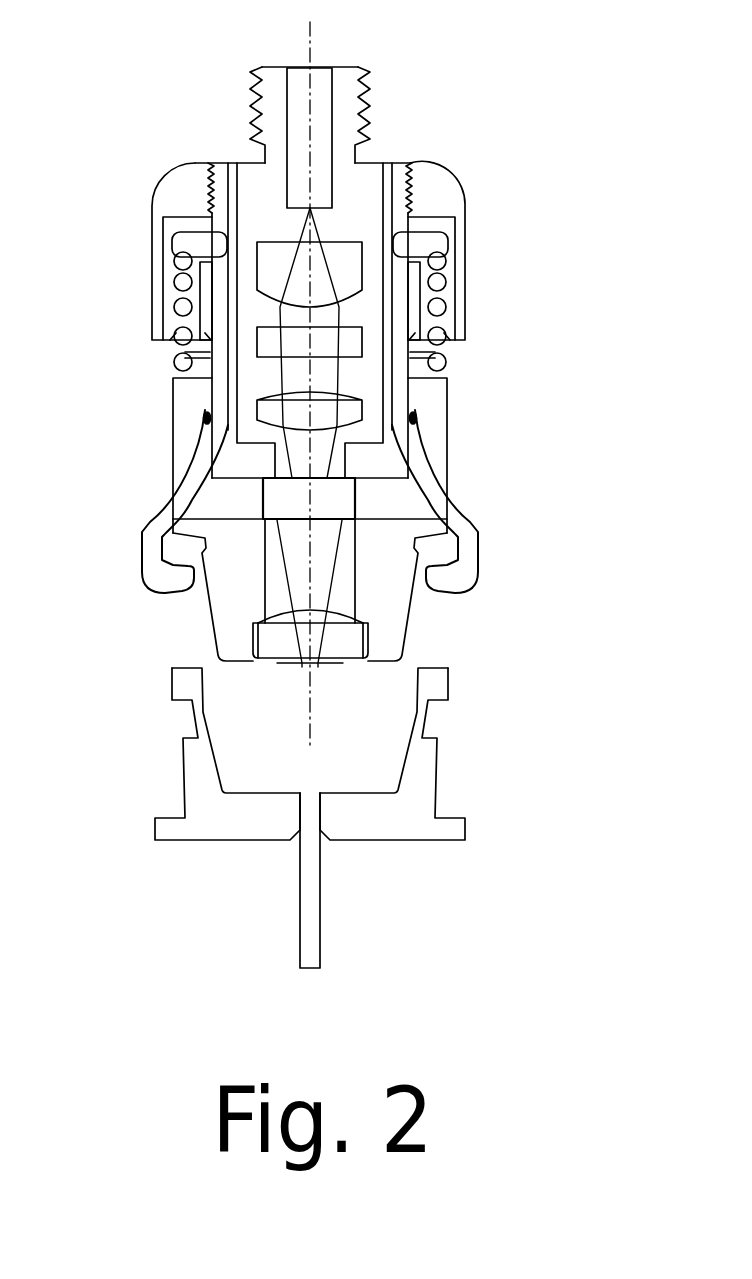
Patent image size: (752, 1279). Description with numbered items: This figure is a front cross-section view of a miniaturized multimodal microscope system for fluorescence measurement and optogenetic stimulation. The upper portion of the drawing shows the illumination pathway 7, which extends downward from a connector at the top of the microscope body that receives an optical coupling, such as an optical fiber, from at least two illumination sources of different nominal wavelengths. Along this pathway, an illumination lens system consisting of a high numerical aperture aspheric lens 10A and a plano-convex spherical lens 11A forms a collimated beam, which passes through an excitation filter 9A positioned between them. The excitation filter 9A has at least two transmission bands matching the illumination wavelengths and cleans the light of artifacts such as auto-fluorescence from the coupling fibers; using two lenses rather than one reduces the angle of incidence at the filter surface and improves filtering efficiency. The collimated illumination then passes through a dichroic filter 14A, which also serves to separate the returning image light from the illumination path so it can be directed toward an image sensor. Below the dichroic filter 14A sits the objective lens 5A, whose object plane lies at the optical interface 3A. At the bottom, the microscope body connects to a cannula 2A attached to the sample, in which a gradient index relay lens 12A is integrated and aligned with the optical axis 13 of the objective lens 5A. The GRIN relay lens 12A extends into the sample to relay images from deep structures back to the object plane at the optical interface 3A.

The cannula 2A is at (410, 828).
The optical interface 3A is at (327, 663).
The objective lens 5A is at (267, 660).
The illumination pathway 7 is at (282, 375).
The excitation filter 9A is at (362, 341).
The high numerical aperture aspheric lens 10A is at (362, 248).
The plano-convex spherical lens 11A is at (362, 410).
The gradient index (GRIN) relay lens 12A is at (321, 895).
The optical axis 13 is at (307, 722).
The dichroic filter 14A is at (337, 503).